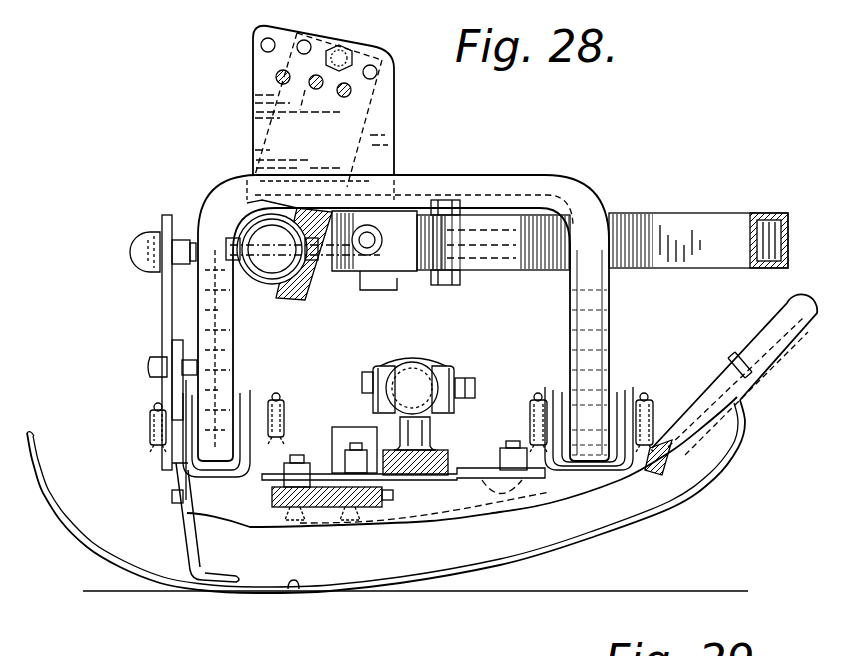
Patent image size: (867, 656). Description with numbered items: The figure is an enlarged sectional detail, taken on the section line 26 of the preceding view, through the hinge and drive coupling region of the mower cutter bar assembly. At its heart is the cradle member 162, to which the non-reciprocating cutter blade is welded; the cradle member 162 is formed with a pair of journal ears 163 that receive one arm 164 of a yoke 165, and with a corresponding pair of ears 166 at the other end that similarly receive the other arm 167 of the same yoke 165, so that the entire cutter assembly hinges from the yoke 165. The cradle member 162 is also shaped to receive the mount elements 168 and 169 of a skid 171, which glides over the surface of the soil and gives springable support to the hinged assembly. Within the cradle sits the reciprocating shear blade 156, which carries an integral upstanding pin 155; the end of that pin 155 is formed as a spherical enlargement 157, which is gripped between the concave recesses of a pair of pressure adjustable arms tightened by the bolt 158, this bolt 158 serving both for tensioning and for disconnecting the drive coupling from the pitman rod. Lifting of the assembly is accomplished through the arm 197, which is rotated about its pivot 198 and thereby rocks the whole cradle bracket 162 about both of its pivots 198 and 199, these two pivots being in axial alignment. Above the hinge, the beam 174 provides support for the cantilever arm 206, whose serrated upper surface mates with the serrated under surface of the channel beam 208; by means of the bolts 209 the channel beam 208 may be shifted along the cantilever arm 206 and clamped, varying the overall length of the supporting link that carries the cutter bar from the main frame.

The section line 26— 26 is at (300, 126).
The upstanding pin 155 is at (420, 434).
The reciprocating shear blade 156 is at (424, 463).
The spherical enlargement 157 is at (407, 372).
The bolt 158 is at (362, 380).
The cradle member 162 is at (477, 497).
The journal ears 163 is at (560, 385).
The arm of yoke 164 is at (590, 455).
The yoke 165 is at (430, 174).
The ears 166 is at (250, 390).
The arm of yoke 167 is at (212, 433).
The mount element 168 is at (763, 370).
The mount element 169 is at (192, 532).
The skid 171 is at (290, 589).
The beam 174 is at (246, 220).
The arm 197 is at (164, 308).
The pivot 198 is at (150, 427).
The pivot 199 is at (652, 418).
The cantilever arm 206 is at (395, 258).
The channel beam 208 is at (770, 188).
The bolts 209 is at (460, 283).